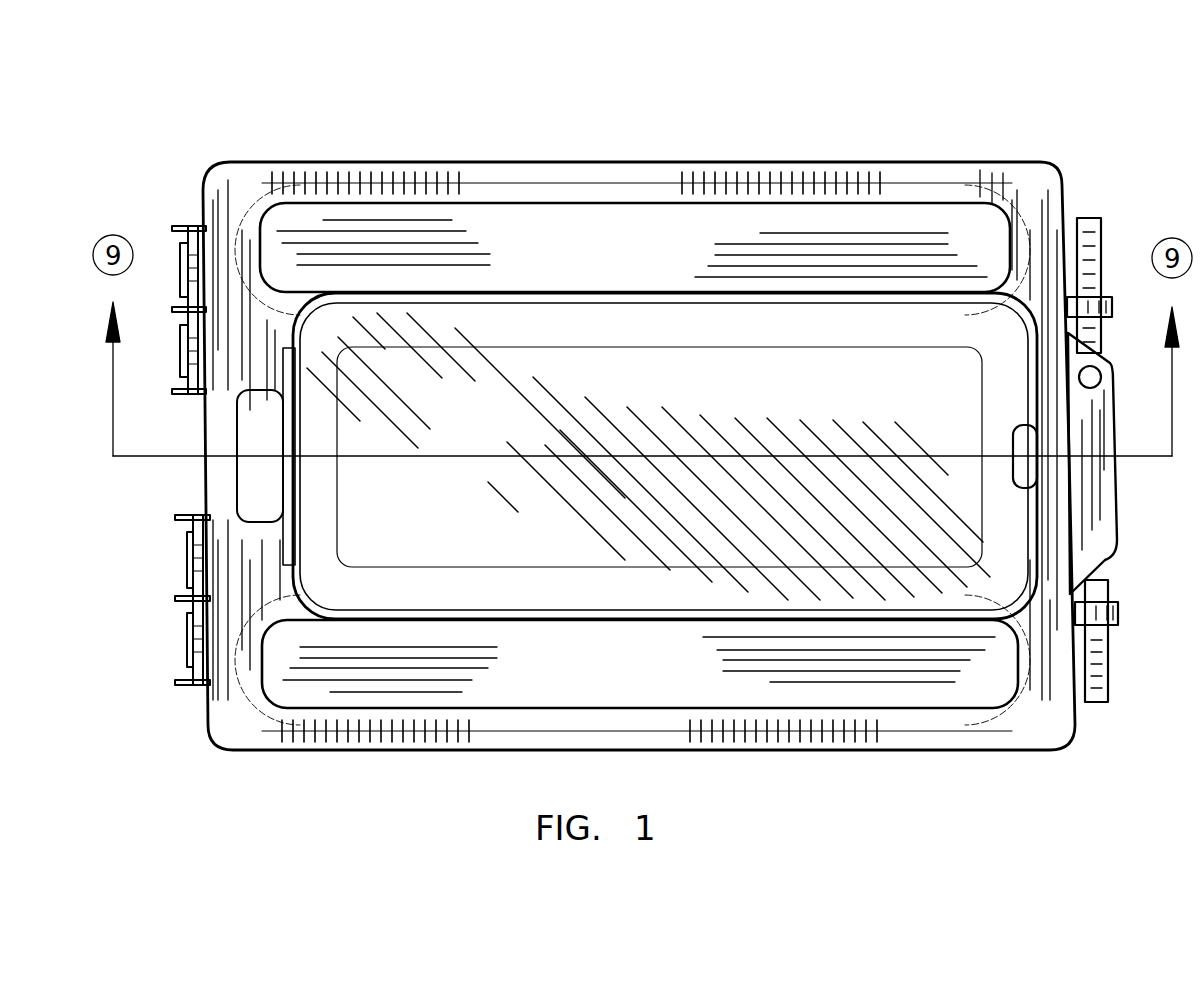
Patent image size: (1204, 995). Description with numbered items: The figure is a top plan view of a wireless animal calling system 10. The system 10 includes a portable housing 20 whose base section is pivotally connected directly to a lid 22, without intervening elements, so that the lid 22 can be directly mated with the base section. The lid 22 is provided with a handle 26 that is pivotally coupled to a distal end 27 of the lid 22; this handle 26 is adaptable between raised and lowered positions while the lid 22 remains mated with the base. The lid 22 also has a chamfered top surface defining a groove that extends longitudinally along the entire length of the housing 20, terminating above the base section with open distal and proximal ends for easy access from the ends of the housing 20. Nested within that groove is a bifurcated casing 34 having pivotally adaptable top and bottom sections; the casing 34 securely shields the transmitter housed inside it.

The system 10 is at (1013, 110).
The portable housing 20 is at (1001, 744).
The lid 22 is at (1068, 730).
The handle 26 is at (1110, 668).
The distal end 27 is at (1118, 530).
The bifurcated casing 34 is at (352, 318).